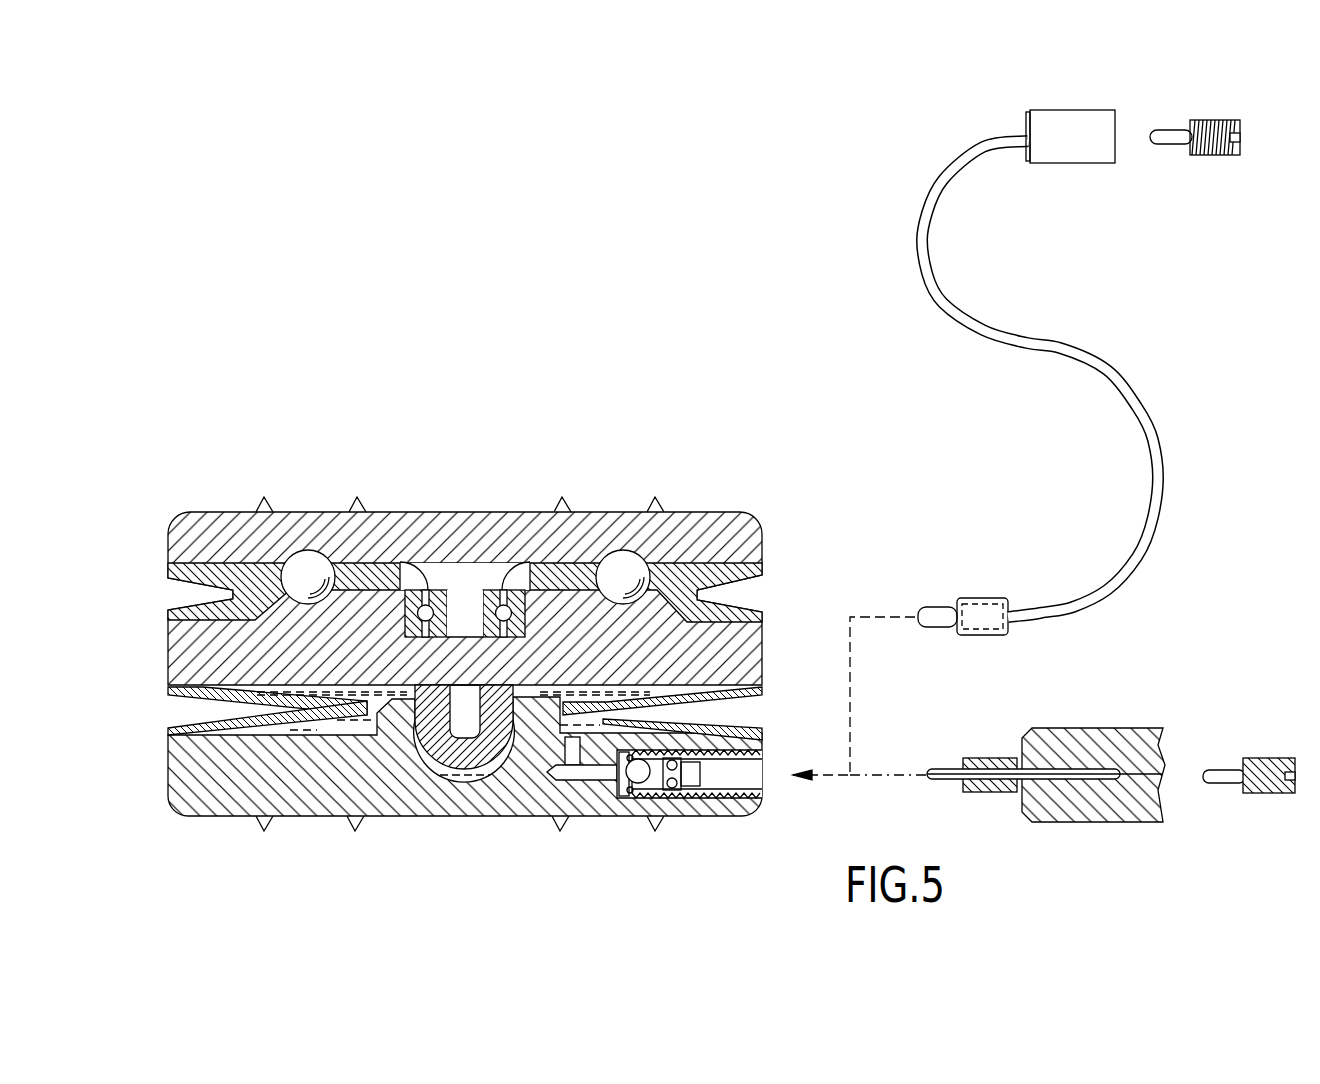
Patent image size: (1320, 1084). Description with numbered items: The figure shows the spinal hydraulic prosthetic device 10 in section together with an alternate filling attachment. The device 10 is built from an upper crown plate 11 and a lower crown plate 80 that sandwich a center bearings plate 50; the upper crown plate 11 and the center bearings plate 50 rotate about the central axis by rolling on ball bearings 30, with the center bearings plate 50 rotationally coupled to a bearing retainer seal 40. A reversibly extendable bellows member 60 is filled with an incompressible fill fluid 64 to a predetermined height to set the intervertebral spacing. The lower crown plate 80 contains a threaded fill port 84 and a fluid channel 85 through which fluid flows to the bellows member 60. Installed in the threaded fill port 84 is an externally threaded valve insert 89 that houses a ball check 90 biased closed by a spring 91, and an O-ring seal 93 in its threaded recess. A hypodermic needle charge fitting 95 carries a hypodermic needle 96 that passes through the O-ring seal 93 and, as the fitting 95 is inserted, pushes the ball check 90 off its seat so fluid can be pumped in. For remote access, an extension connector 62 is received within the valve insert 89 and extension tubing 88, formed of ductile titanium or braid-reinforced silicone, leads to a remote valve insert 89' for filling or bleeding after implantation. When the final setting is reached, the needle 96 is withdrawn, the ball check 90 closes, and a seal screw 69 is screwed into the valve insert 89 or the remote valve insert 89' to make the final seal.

The spinal hydraulic prosthetic device 10 is at (470, 437).
The upper crown plate 11 is at (325, 528).
The ball bearings 30 is at (625, 558).
The bearing retainer seal 40 is at (733, 577).
The center bearings plate 50 is at (190, 651).
The bellows member 60 is at (203, 723).
The fill fluid 64 is at (340, 727).
The lower crown plate 80 is at (308, 790).
The threaded fill port 84 is at (696, 797).
The fluid channel 85 is at (568, 755).
The extension tubing 88 is at (1162, 432).
The valve insert 89 is at (724, 751).
The remote valve insert 89' is at (1070, 175).
The ball check 90 is at (640, 782).
The spring 91 is at (624, 790).
The O-ring seal 93 is at (675, 792).
The extension connector 62 is at (975, 598).
The seal screw 69 is at (1210, 155).
The hypodermic needle charge fitting 95 is at (1155, 822).
The hypodermic needle 96 is at (935, 770).